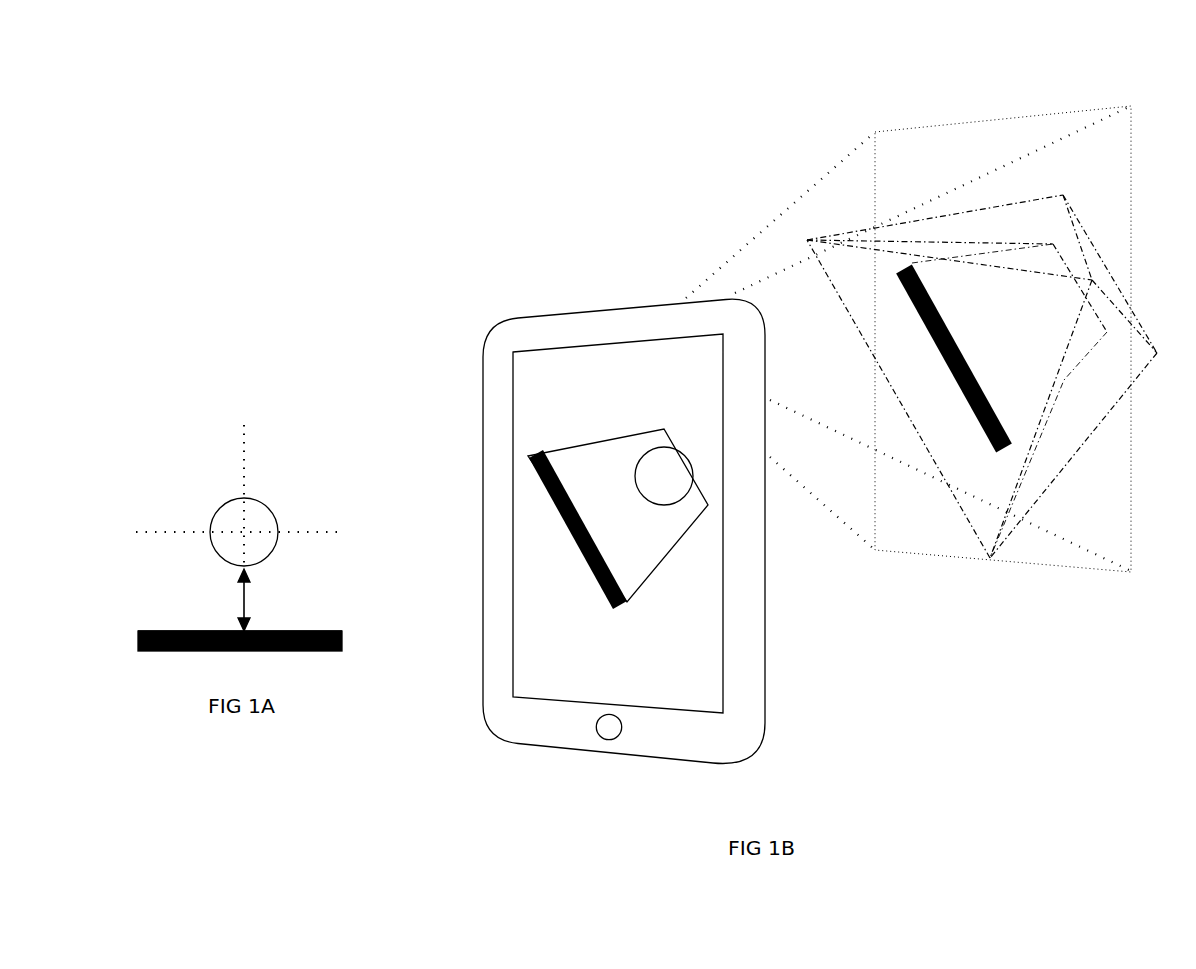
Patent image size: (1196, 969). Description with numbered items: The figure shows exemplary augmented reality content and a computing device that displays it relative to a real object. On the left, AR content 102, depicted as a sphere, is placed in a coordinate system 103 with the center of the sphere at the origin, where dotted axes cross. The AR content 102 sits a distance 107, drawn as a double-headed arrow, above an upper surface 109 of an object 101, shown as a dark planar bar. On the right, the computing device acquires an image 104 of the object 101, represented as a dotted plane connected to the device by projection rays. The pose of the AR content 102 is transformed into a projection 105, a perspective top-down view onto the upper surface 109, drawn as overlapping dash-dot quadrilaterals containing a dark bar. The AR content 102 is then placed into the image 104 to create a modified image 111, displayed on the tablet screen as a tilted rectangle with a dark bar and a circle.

In FIG. 1A, the object 101 is at (156, 674).
In FIG. 1A, the AR content 102 is at (206, 504).
In FIG. 1A, the coordinate system 103 is at (242, 408).
In FIG. 1B, the image 104 is at (974, 107).
In FIG. 1B, the projection 105 is at (972, 190).
In FIG. 1A, the distance 107 is at (222, 595).
In FIG. 1A, the upper surface 109 is at (282, 619).
In FIG. 1B, the modified image 111 is at (632, 285).